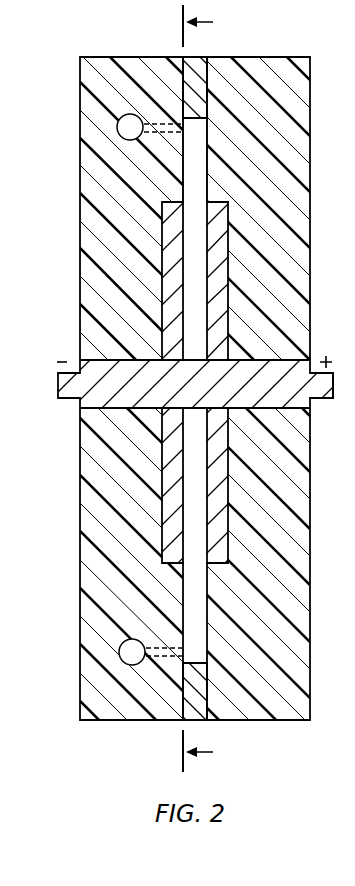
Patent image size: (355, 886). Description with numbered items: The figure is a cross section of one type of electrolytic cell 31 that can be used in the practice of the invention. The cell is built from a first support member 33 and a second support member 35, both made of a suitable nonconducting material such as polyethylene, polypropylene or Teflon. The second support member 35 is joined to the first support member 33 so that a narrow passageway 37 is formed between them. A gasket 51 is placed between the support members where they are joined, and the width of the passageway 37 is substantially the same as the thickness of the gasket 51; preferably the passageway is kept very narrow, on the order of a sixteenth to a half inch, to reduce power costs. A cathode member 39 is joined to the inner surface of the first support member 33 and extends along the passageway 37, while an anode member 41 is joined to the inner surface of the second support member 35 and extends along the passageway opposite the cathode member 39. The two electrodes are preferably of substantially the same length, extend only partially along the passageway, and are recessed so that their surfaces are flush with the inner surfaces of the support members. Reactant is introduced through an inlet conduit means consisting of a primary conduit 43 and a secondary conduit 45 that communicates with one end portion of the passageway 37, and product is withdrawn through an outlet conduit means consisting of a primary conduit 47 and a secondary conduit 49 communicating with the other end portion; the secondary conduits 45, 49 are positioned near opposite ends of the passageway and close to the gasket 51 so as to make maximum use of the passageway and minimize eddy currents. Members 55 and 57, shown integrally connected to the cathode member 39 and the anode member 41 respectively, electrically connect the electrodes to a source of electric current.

The electrolytic cell 31 is at (64, 173).
The first support member 33 is at (103, 57).
The second support member 35 is at (272, 57).
The passageway 37 is at (198, 146).
The cathode member 39 is at (164, 250).
The anode member 41 is at (220, 256).
The primary conduit 43 is at (132, 639).
The secondary conduit 45 is at (172, 665).
The primary conduit 47 is at (128, 140).
The secondary conduit 49 is at (174, 132).
The gasket 51 is at (194, 58).
The member for electrically connecting the cathode 55 is at (69, 398).
The member for electrically connecting the anode 57 is at (322, 400).